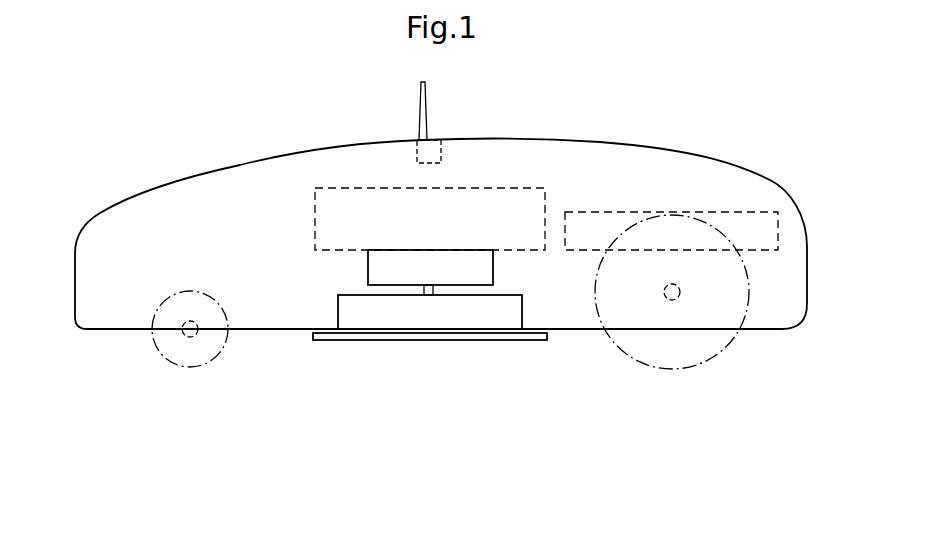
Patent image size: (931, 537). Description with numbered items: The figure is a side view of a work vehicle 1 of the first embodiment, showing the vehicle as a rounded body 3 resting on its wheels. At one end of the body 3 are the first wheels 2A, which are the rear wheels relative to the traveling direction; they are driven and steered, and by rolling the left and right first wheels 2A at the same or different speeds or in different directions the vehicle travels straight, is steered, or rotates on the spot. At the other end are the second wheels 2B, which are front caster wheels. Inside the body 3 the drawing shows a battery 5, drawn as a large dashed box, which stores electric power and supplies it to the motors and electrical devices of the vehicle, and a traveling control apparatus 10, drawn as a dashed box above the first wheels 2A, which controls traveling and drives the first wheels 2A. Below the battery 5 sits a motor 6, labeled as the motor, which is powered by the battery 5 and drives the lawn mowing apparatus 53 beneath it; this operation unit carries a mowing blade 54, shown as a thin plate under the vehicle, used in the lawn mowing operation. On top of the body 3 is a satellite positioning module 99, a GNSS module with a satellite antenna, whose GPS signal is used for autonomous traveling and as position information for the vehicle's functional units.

The work vehicle 1 is at (138, 137).
The first wheels 2A is at (677, 355).
The second wheels 2B is at (196, 355).
The body 3 is at (723, 160).
The battery 5 is at (349, 186).
The motor 6 is at (373, 270).
The traveling control apparatus 10 is at (636, 212).
The lawn mowing apparatus 53 is at (510, 314).
The mowing blade 54 is at (533, 341).
The satellite positioning module 99 is at (427, 100).